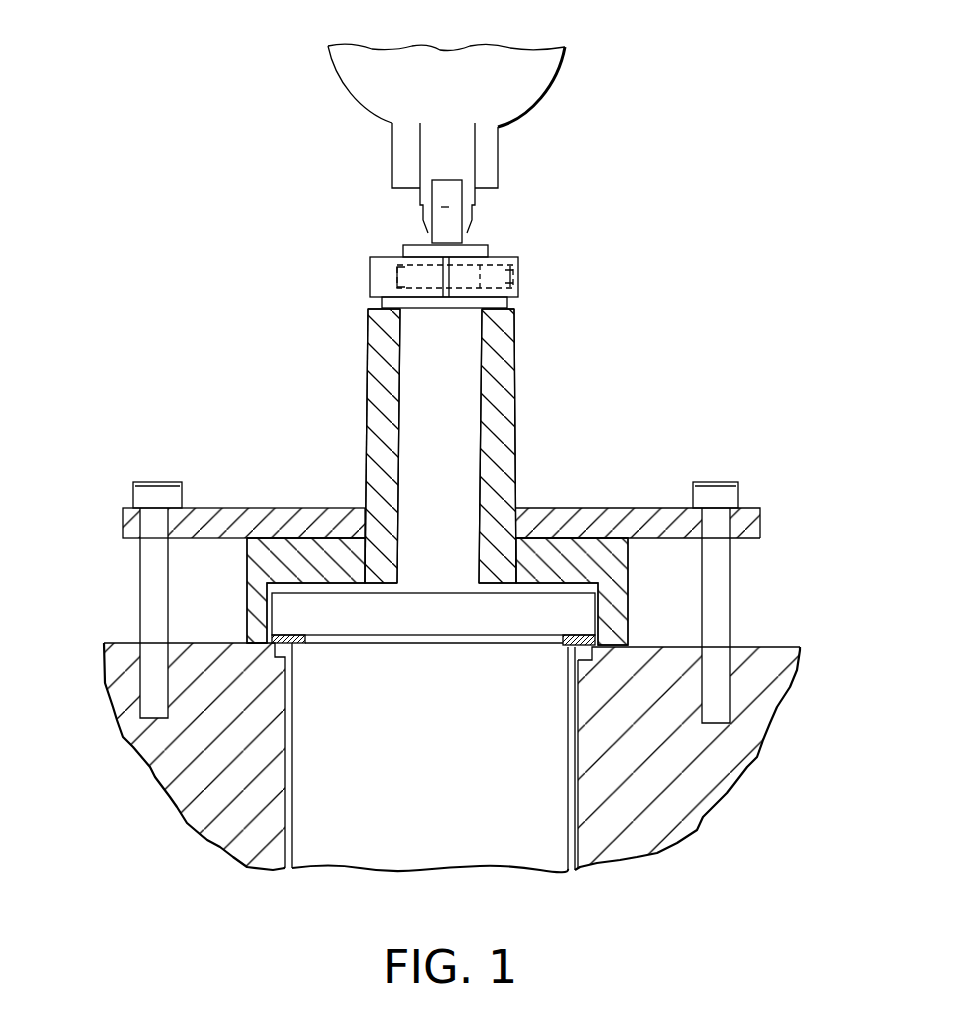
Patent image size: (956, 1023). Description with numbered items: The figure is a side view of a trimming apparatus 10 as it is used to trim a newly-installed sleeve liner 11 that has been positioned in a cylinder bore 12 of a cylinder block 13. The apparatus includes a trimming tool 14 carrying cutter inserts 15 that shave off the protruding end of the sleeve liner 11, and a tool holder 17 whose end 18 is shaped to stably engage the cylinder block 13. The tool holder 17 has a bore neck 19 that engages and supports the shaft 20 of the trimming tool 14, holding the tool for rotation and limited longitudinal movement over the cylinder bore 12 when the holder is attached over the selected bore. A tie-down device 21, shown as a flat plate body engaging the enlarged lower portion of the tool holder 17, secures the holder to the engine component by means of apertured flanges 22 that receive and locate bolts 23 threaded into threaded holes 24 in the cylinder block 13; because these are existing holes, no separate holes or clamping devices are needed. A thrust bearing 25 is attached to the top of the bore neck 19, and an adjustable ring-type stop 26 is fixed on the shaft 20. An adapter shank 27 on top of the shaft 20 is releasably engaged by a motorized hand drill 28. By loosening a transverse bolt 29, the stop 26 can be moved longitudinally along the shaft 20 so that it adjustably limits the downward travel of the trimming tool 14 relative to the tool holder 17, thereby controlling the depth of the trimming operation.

The trimming apparatus 10 is at (598, 370).
The sleeve liner 11 is at (297, 742).
The cylinder bore 12 is at (405, 772).
The cylinder block 13 is at (165, 767).
The trimming tool 14 is at (458, 517).
The cutter inserts 15 is at (305, 645).
The tool holder 17 is at (449, 446).
The end 18 is at (620, 577).
The bore neck 19 is at (367, 401).
The shaft 20 is at (418, 392).
The tie-down device 21 is at (760, 508).
The apertured flanges 22 is at (760, 538).
The bolts 23 is at (136, 482).
The threaded holes 24 is at (137, 680).
The thrust bearing 25 is at (375, 303).
The adjustable ring-type stop 26 is at (520, 262).
The adapter shank 27 is at (455, 237).
The motorized hand drill 28 is at (540, 88).
The transverse bolt 29 is at (520, 282).